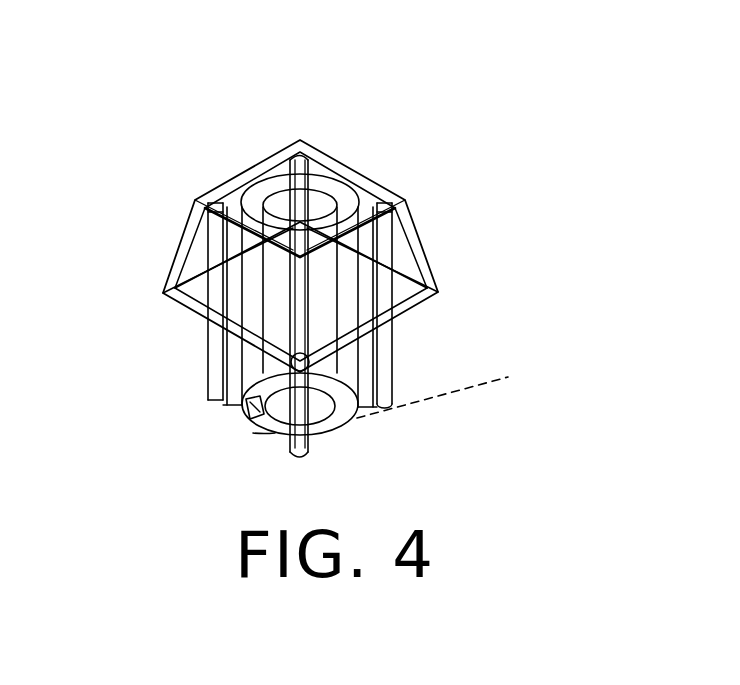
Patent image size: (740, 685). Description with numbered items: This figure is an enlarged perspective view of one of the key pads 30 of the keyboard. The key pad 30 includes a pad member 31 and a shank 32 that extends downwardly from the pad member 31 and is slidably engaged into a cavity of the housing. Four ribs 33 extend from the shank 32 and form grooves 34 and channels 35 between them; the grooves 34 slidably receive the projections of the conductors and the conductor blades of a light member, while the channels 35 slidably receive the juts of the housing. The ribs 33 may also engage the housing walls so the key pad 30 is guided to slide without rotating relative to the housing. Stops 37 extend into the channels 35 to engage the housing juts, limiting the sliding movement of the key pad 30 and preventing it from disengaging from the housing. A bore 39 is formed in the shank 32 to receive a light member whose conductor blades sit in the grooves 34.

The key pad 30 is at (321, 248).
The pad member 31 is at (373, 185).
The shank 32 is at (255, 363).
The ribs 33 is at (385, 348).
The grooves 34 is at (340, 442).
The channels 35 is at (253, 433).
The stops 37 is at (243, 410).
The bore 39 is at (454, 381).